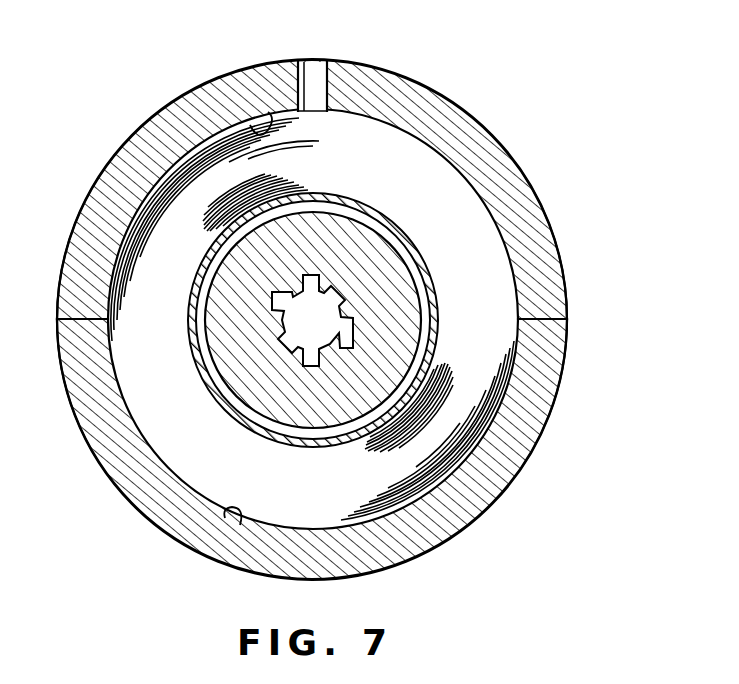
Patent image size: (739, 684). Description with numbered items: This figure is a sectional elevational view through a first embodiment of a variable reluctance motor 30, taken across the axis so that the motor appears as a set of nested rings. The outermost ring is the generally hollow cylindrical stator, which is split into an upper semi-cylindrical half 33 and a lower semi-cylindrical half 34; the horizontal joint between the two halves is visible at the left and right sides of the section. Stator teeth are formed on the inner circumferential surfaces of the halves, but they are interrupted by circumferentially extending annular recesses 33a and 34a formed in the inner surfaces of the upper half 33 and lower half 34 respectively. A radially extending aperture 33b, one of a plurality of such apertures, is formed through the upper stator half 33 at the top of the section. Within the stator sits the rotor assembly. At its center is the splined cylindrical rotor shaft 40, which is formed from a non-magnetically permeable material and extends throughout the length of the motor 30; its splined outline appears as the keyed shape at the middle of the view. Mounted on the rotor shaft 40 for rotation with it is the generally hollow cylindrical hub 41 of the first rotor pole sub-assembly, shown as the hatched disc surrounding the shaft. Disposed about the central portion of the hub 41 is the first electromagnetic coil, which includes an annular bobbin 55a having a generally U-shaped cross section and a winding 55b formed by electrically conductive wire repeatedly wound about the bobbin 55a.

The variable reluctance motor 30 is at (565, 135).
The upper semi-cylindrical half 33 is at (418, 105).
The annular recess 33a is at (250, 125).
The radially extending aperture 33b is at (330, 62).
The lower semi-cylindrical half 34 is at (150, 508).
The annular recess 34a is at (240, 525).
The rotor shaft 40 is at (336, 334).
The hub 41 is at (402, 360).
The bobbin 55a is at (218, 388).
The winding 55b is at (415, 221).